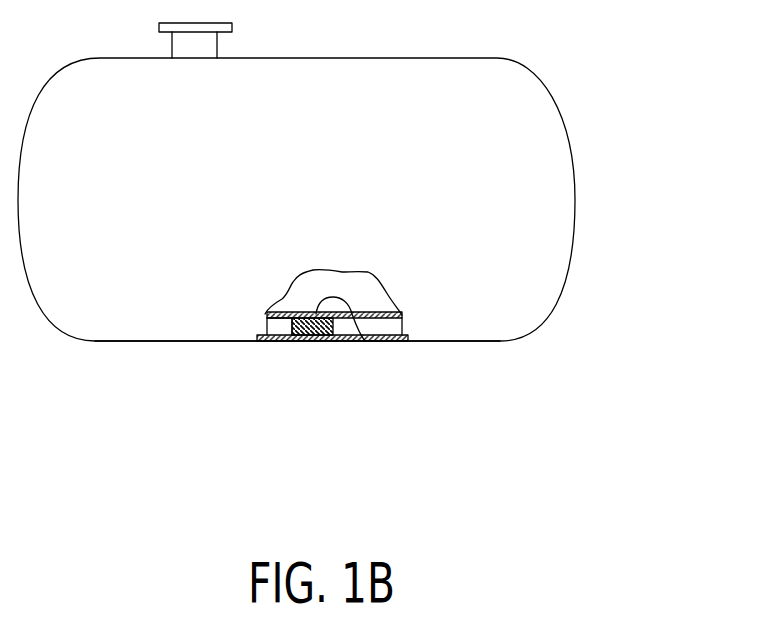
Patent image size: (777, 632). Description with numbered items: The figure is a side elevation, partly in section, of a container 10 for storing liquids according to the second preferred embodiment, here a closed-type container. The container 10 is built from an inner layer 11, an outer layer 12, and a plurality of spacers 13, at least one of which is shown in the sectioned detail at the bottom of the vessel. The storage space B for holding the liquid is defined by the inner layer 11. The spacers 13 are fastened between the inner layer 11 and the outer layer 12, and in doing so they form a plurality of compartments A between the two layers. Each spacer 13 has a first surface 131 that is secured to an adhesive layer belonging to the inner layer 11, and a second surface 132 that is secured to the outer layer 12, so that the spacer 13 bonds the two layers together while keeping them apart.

The container 10 is at (173, 343).
The inner layer 11 is at (402, 315).
The outer layer 12 is at (278, 341).
The spacer 13 is at (325, 341).
The first surface 131 is at (365, 341).
The second surface 132 is at (308, 341).
The compartment A is at (268, 322).
The storage space B is at (375, 297).